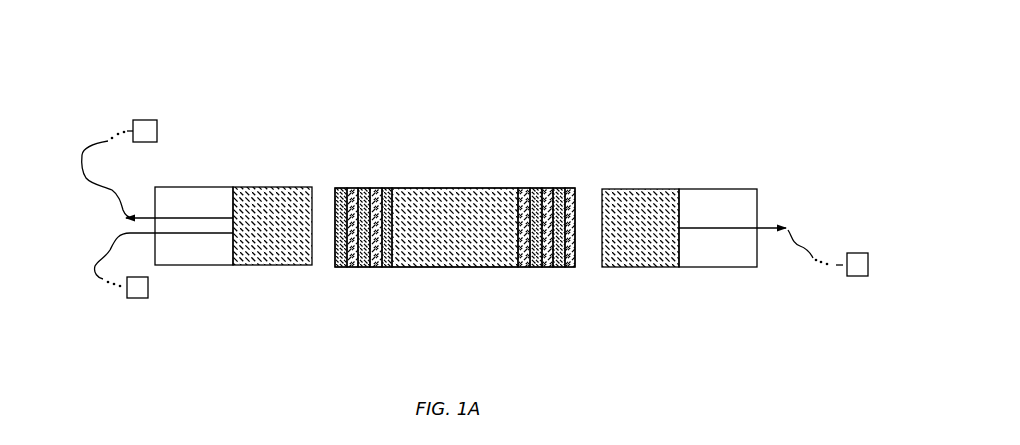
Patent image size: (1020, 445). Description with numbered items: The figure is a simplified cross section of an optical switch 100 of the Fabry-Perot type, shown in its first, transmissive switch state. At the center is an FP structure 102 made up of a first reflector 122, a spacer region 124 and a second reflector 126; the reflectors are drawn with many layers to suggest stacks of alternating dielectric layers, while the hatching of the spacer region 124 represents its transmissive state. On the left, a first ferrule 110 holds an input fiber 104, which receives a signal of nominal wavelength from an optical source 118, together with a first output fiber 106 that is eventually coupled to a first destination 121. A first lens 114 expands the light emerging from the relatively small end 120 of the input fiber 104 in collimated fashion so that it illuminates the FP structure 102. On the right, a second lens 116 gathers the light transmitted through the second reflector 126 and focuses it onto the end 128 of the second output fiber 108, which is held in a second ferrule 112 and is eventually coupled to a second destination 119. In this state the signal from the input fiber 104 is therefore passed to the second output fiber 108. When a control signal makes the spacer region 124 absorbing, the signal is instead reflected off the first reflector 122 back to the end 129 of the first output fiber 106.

The optical switch 100 is at (644, 71).
The FP structure 102 is at (335, 162).
The input fiber 104 is at (90, 180).
The first output fiber 106 is at (110, 253).
The second output fiber 108 is at (806, 247).
The first ferrule 110 is at (168, 187).
The second ferrule 112 is at (708, 189).
The first lens 114 is at (290, 266).
The second lens 116 is at (627, 267).
The optical source 118 is at (140, 119).
The second destination 119 is at (858, 277).
The end of the input fiber 120 is at (234, 218).
The first destination 121 is at (135, 299).
The first reflector 122 is at (335, 186).
The spacer region 124 is at (428, 188).
The second reflector 126 is at (518, 186).
The end of the second output fiber 128 is at (679, 228).
The end of the first output fiber 129 is at (234, 234).